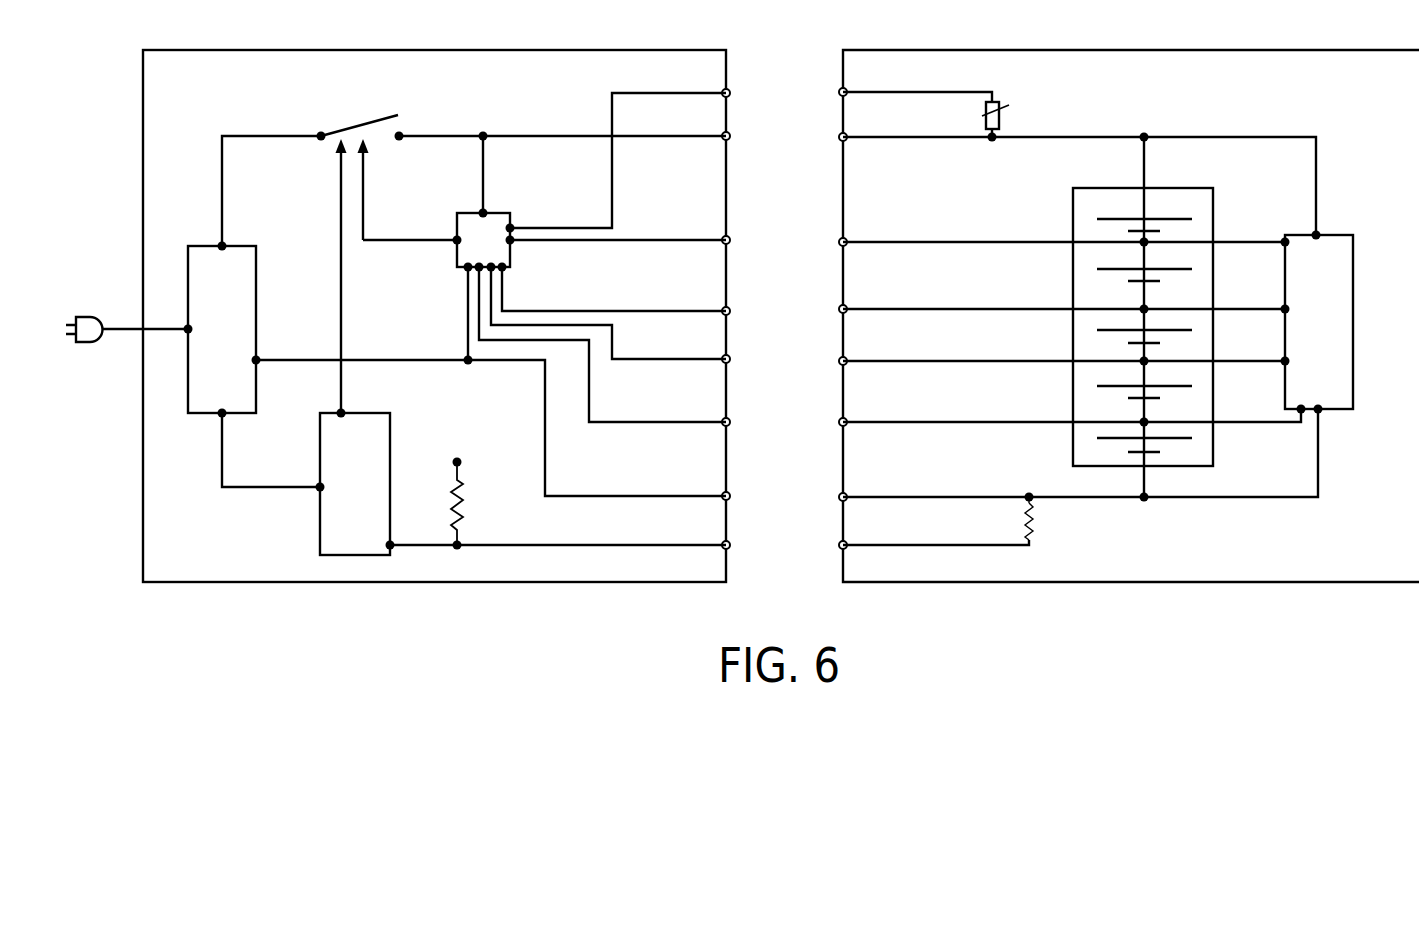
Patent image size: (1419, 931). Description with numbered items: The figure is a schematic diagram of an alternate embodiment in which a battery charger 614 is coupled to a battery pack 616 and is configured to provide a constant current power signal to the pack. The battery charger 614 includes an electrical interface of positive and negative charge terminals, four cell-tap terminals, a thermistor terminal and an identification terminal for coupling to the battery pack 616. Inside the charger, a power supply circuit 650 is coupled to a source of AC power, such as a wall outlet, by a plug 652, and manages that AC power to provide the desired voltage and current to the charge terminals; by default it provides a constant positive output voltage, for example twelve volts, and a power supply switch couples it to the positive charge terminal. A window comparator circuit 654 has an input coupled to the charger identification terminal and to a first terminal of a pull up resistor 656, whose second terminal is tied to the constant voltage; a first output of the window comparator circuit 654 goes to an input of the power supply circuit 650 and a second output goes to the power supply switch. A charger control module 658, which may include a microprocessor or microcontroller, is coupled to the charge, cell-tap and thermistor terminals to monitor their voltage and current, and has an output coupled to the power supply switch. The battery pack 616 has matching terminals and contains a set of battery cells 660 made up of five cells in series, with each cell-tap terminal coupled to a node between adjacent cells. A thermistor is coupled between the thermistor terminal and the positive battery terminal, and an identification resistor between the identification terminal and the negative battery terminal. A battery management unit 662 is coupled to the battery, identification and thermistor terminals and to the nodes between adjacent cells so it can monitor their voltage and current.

The battery charger 614 is at (436, 297).
The battery pack 616 is at (1129, 298).
The power supply circuit 650 is at (252, 365).
The plug 652 is at (85, 317).
The window comparator circuit 654 is at (355, 482).
The pull up resistor 656 is at (483, 493).
The charger control module 658 is at (484, 204).
The set of battery cells 660 is at (1143, 319).
The battery management unit 662 is at (1317, 322).